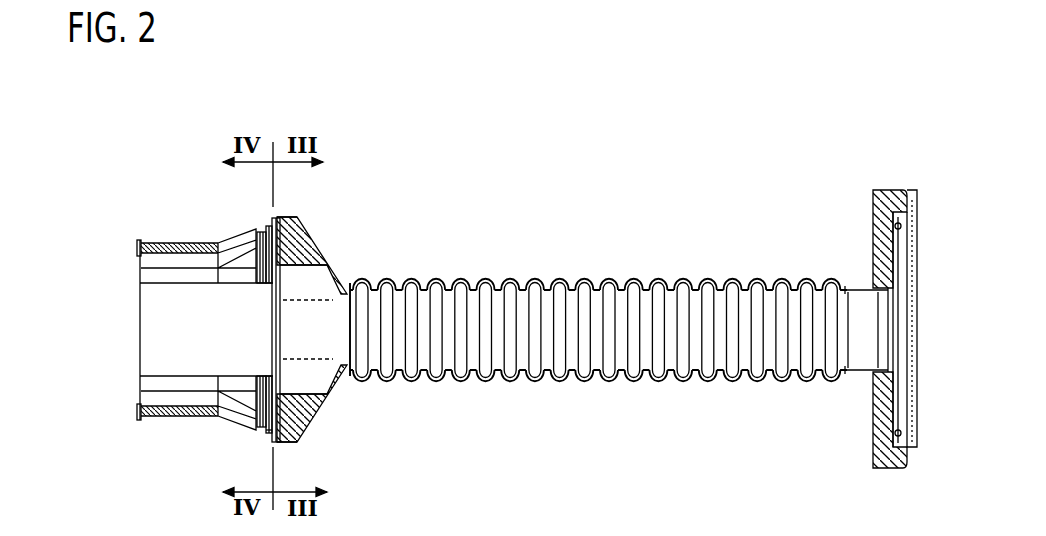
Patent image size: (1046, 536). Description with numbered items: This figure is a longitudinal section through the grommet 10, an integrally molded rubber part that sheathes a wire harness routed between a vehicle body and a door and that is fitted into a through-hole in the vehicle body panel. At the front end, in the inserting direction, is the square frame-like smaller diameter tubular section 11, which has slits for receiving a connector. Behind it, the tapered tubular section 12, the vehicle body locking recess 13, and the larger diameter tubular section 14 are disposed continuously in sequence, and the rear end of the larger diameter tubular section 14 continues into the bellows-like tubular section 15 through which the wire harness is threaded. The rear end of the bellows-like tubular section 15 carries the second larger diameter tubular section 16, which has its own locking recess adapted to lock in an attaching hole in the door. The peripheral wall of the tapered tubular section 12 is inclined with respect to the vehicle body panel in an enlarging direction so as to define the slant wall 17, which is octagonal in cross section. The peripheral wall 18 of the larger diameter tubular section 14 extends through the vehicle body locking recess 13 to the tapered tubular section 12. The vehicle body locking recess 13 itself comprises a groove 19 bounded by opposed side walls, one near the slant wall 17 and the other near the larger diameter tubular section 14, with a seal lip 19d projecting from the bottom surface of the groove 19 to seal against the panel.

The grommet 10 is at (535, 272).
The smaller diameter tubular section 11 is at (167, 245).
The tapered tubular section 12 is at (222, 243).
The vehicle body locking recess 13 is at (262, 232).
The larger diameter tubular section 14 is at (300, 217).
The bellows-like tubular section 15 is at (597, 278).
The second larger diameter tubular section 16 is at (879, 188).
The slant wall 17 is at (243, 230).
The peripheral wall 18 is at (285, 216).
The groove 19 is at (263, 233).
The seal lip 19d is at (270, 428).